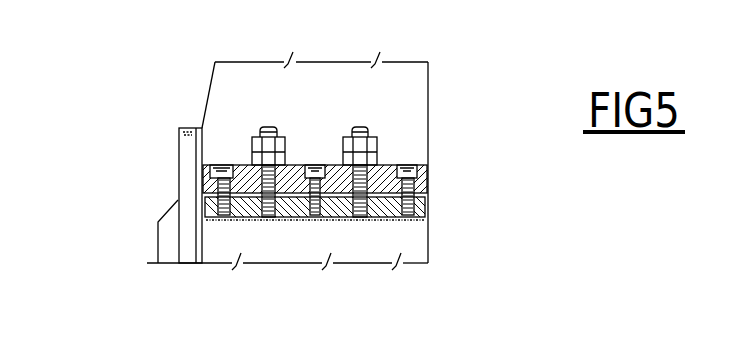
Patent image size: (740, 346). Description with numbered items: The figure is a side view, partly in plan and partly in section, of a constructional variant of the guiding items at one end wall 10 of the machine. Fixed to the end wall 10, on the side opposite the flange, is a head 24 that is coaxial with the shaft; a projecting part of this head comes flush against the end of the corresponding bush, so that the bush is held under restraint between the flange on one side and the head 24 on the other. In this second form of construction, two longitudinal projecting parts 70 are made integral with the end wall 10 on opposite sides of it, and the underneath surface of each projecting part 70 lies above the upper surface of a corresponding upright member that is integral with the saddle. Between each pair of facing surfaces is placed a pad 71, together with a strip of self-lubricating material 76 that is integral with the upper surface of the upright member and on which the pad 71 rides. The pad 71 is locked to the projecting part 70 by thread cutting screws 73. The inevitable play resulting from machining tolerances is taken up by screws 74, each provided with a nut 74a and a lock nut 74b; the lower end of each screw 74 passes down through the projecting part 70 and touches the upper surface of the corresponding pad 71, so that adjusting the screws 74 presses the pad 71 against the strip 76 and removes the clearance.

The end wall 10 is at (336, 103).
The head 24 is at (160, 233).
The longitudinal projecting part 70 is at (425, 184).
The pad 71 is at (425, 207).
The thread cutting screw 73 is at (212, 172).
The screw 74 is at (352, 222).
The nut 74a is at (255, 157).
The lock nut 74b is at (262, 133).
The strip of self-lubricating material 76 is at (383, 222).